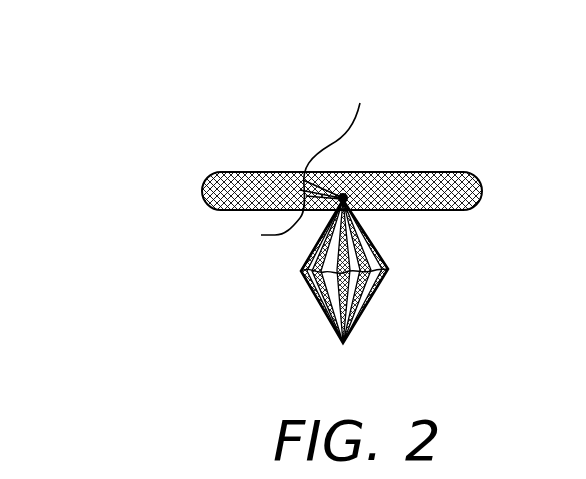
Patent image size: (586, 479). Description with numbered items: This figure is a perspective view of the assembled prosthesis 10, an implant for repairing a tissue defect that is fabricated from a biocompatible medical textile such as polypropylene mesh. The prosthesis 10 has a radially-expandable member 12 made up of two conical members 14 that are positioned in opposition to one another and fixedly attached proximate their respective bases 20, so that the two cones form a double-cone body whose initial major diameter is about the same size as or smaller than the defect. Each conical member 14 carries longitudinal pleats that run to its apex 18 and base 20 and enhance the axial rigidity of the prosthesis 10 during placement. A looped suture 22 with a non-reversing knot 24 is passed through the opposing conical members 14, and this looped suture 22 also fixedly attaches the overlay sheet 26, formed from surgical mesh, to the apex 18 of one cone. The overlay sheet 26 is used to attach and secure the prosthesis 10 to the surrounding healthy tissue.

The prosthesis 10 is at (178, 281).
The radially-expandable member 12 is at (336, 289).
The conical members 14 is at (375, 246).
The apex 18 is at (400, 348).
The base 20 is at (318, 317).
The looped suture 22 is at (342, 135).
The non-reversing knot 24 is at (348, 195).
The overlay sheet 26 is at (223, 186).